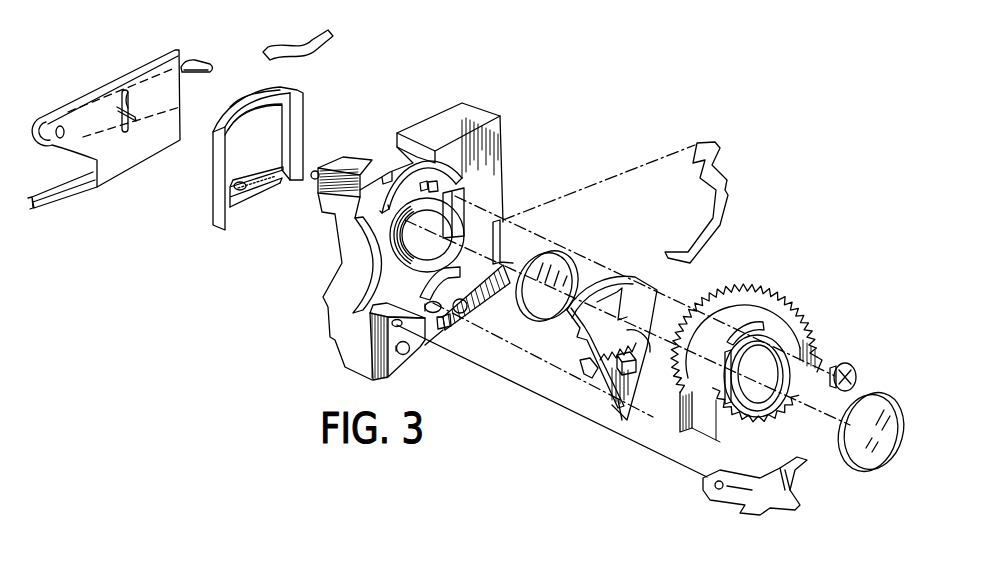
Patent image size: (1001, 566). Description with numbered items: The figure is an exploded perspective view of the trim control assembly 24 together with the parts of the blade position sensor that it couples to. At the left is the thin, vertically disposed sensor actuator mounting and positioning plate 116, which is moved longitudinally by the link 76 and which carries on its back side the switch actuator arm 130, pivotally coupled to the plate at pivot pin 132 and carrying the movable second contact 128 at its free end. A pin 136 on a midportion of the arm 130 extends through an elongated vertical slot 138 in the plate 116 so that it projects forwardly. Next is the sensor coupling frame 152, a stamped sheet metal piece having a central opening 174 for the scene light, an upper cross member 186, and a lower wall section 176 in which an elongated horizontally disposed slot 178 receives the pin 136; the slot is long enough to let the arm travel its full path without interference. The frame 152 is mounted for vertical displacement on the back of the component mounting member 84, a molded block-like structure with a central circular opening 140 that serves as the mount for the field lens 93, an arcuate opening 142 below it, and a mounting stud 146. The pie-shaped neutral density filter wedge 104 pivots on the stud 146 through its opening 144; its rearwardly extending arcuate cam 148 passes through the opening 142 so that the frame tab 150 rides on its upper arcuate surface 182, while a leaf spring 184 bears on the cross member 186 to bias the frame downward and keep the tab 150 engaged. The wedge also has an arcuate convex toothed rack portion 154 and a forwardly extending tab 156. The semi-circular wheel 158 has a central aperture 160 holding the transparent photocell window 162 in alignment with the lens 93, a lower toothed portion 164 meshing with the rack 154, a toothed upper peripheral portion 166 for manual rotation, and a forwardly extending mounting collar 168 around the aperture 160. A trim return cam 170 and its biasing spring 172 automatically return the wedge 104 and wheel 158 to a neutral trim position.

The trim control assembly 24 is at (583, 114).
The link 76 is at (73, 182).
The component mounting member 84 is at (473, 113).
The field lens 93 is at (540, 304).
The neutral density filter wedge 104 is at (635, 276).
The sensor actuator mounting and positioning plate 116 is at (145, 155).
The second contact 128 is at (182, 62).
The switch actuator arm 130 is at (212, 70).
The pivot pin 132 is at (70, 120).
The pin 136 is at (133, 110).
The elongated vertical slot 138 is at (127, 87).
The central circular opening 140 is at (436, 188).
The arcuate opening 142 is at (480, 300).
The opening 144 is at (620, 400).
The mounting stud 146 is at (432, 318).
The arcuate cam 148 is at (598, 372).
The tab 150 is at (213, 178).
The sensor coupling frame 152 is at (208, 236).
The arcuate convex toothed rack portion 154 is at (624, 350).
The forwardly extending tab 156 is at (637, 366).
The wheel 158 is at (826, 339).
The central aperture 160 is at (755, 362).
The transparent photocell window 162 is at (895, 413).
The lower toothed portion 164 is at (772, 406).
The upper peripheral portion 166 is at (773, 287).
The mounting collar 168 is at (722, 418).
The trim return cam 170 is at (775, 504).
The biasing spring 172 is at (718, 163).
The central opening 174 is at (265, 132).
The lower wall section 176 is at (230, 210).
The elongated horizontally disposed slot 178 is at (242, 203).
The upper arcuate surface 182 is at (590, 365).
The leaf spring 184 is at (282, 50).
The upper cross member 186 is at (272, 85).